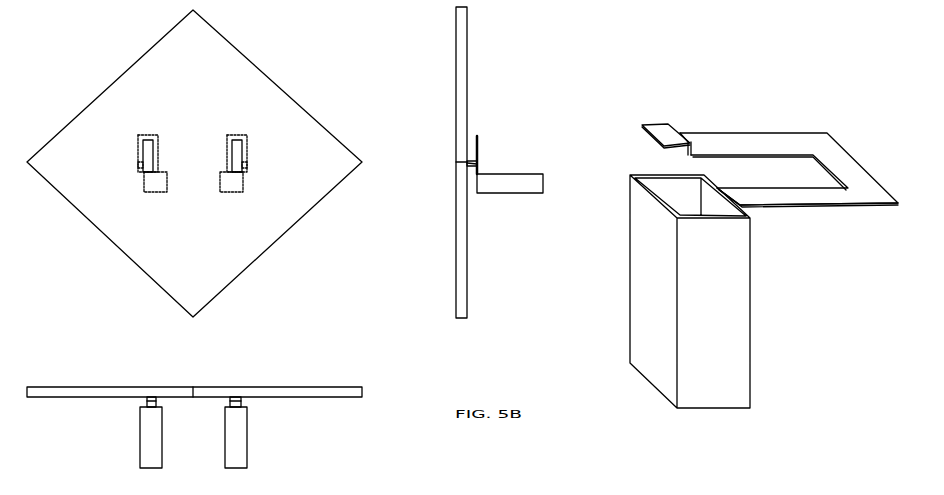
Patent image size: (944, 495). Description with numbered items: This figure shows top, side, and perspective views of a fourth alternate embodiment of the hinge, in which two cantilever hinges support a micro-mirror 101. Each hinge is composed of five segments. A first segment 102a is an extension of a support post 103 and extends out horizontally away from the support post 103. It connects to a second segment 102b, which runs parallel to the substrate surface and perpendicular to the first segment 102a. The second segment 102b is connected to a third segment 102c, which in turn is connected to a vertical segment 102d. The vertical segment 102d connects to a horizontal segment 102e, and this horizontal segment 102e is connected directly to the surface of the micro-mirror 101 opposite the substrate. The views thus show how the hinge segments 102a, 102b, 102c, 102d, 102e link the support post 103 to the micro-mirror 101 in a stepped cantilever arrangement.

The micro-mirror 101 is at (223, 72).
The segment 102a is at (156, 152).
The segment 102b is at (147, 135).
The segment 102c is at (138, 153).
The vertical segment 102d is at (467, 161).
The horizontal segment 102e is at (139, 165).
The support post 103 is at (150, 185).